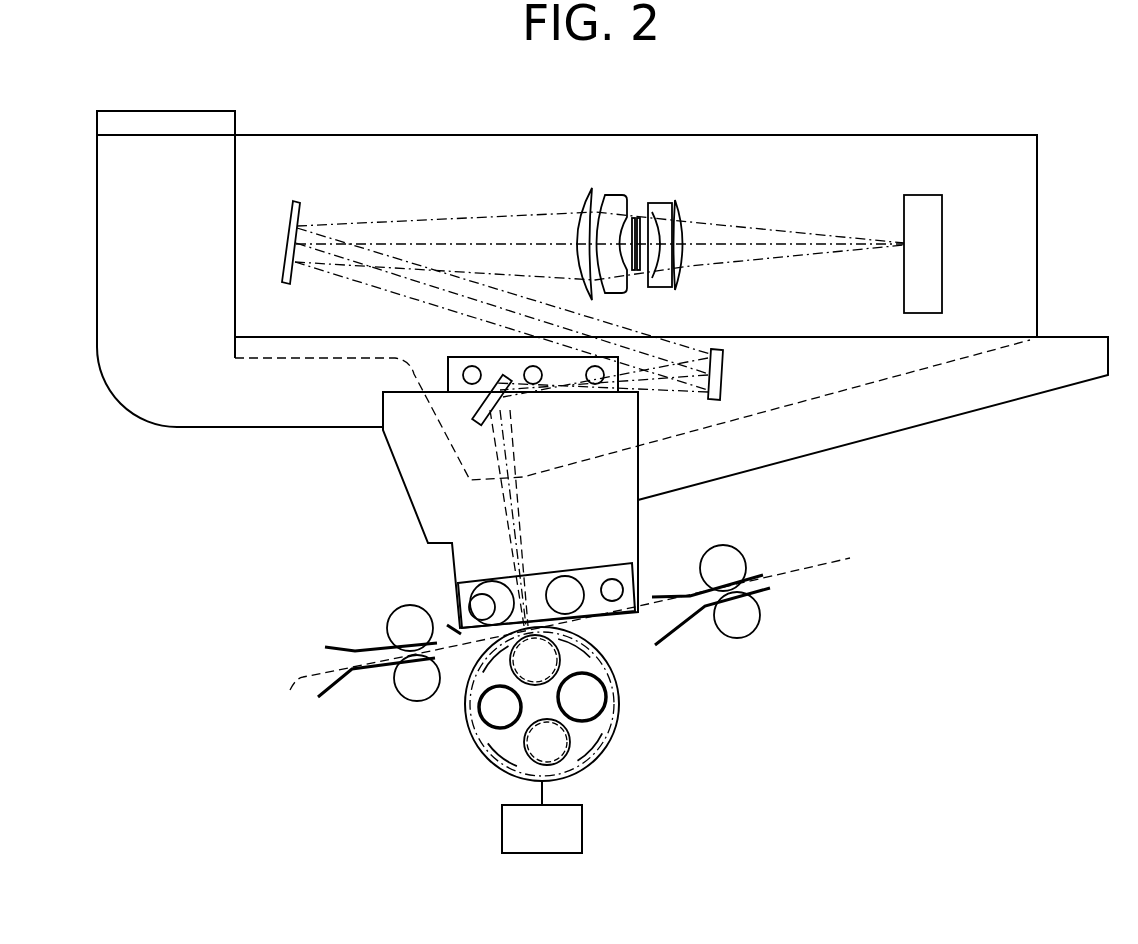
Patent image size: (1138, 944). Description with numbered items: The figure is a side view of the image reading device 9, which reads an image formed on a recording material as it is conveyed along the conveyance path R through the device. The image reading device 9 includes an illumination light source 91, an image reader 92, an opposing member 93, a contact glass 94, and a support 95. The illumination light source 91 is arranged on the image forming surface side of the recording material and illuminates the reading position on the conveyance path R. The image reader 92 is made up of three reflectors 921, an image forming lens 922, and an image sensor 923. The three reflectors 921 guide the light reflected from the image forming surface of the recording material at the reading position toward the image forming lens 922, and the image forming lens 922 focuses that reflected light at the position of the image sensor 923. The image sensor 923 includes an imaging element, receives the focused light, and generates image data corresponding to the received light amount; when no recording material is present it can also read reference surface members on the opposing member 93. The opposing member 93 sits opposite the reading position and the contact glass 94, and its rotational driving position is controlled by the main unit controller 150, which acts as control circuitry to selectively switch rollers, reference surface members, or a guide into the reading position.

The image reading device 9 is at (946, 112).
The image reader 92 is at (778, 392).
The reflectors 921 is at (295, 200).
The image forming lens 922 is at (592, 176).
The image sensor 923 is at (942, 214).
The support 95 is at (639, 522).
The illumination light source 91 is at (490, 582).
The contact glass 94 is at (540, 590).
The opposing member 93 is at (640, 678).
The main unit controller 150 is at (530, 857).
The conveyance path R is at (561, 637).